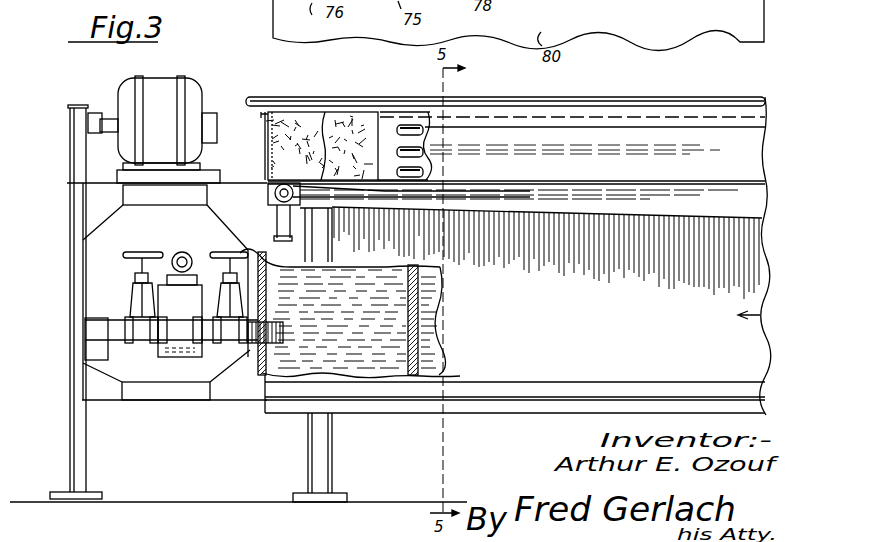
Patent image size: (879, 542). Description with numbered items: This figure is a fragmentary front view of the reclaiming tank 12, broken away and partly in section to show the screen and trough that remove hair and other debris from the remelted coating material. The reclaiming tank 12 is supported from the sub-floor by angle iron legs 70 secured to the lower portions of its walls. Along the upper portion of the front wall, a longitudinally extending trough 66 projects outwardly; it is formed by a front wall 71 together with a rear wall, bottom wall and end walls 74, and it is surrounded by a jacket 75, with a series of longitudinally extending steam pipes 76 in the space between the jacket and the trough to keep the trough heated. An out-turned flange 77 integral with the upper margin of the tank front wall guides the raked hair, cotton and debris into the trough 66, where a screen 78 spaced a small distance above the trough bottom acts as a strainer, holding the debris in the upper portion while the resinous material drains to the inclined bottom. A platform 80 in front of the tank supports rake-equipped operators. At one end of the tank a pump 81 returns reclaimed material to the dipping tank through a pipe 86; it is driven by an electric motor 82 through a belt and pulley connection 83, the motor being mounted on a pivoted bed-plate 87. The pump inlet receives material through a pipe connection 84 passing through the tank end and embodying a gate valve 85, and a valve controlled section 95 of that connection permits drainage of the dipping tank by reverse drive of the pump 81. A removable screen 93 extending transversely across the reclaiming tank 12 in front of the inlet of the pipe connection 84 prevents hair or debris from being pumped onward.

The reclaiming tank 12 is at (759, 318).
The trough 66 is at (280, 118).
The angle iron legs 70 is at (323, 440).
The front wall 71 is at (386, 122).
The end walls 74 is at (269, 152).
The jacket 75 is at (598, 200).
The steam pipes 76 is at (421, 175).
The out-turned flange 77 is at (602, 108).
The screen 78 is at (323, 178).
The platform 80 is at (512, 390).
The pump 81 is at (174, 377).
The electric motor 82 is at (155, 86).
The belt and pulley connection 83 is at (70, 160).
The pipe connection 84 is at (290, 367).
The gate valve 85 is at (234, 253).
The pipe 86 is at (181, 252).
The pivoted bed-plate 87 is at (220, 176).
The screen 93 is at (441, 328).
The valve controlled section 95 is at (137, 345).